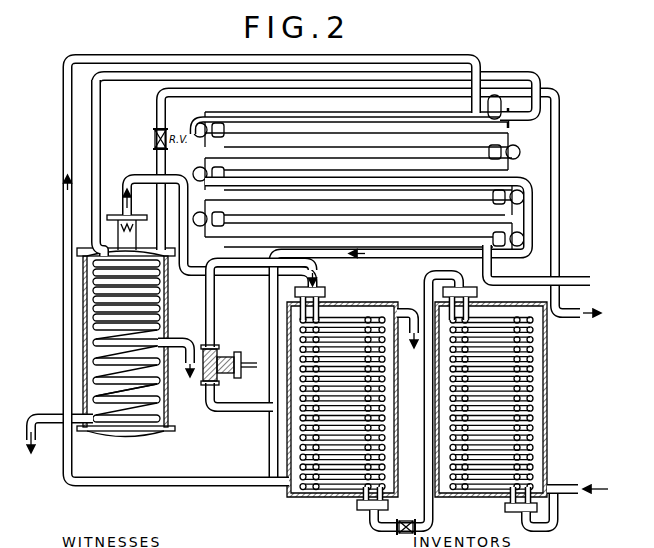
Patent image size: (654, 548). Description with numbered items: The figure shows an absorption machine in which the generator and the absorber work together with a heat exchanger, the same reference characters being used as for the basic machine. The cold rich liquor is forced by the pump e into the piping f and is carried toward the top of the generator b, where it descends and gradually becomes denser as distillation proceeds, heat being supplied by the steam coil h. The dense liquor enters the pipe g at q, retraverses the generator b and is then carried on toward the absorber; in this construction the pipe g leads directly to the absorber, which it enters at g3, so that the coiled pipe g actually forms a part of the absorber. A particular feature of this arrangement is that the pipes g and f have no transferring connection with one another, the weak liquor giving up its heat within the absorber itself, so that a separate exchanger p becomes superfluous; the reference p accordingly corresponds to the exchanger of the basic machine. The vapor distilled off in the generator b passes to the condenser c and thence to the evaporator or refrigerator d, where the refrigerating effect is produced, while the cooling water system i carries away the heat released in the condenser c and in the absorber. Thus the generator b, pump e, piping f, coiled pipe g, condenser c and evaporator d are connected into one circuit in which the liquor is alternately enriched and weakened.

The generator b is at (168, 322).
The condenser c is at (350, 316).
The evaporator or refrigerator d is at (252, 238).
The pump e is at (221, 358).
The piping f is at (96, 91).
The pipe g is at (161, 103).
The entry point of pipe g into the absorber g3 is at (495, 96).
The steam coil h is at (162, 406).
The cooling water system i is at (63, 117).
The exchanger p is at (570, 311).
The entry point of liquor into pipe g q is at (170, 416).